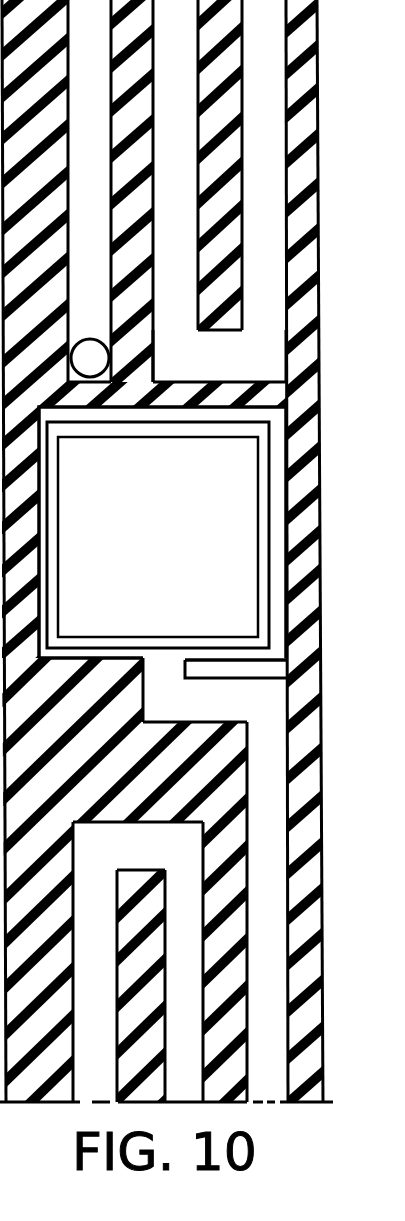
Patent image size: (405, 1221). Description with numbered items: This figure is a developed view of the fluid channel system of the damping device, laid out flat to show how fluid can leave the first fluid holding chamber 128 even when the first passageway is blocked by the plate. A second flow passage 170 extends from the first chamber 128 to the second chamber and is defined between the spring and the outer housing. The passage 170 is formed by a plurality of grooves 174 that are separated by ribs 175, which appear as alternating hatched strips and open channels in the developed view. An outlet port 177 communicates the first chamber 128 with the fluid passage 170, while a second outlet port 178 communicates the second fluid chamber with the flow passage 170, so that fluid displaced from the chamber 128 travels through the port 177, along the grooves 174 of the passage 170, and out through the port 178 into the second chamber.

The first fluid holding chamber 128 is at (173, 545).
The second flow passage 170 is at (233, 362).
The grooves 174 is at (258, 200).
The ribs 175 is at (213, 135).
The outlet port 177 is at (157, 665).
The second outlet port 178 is at (87, 361).